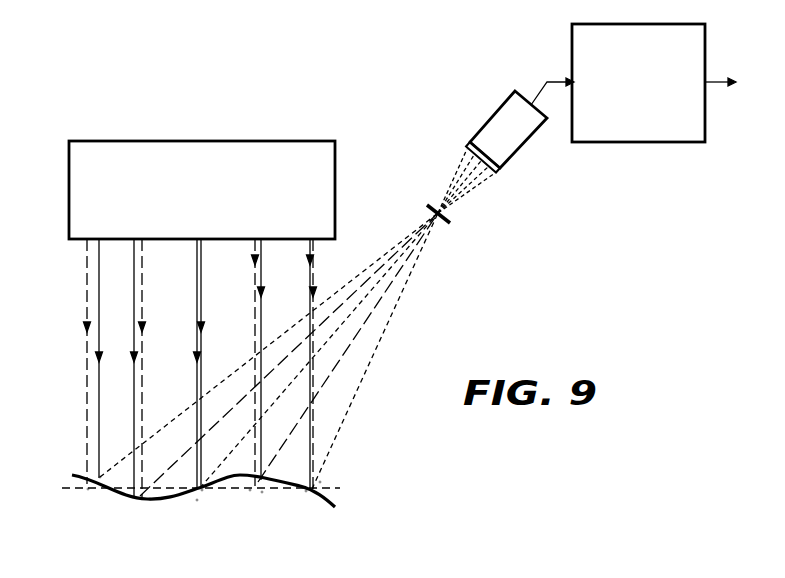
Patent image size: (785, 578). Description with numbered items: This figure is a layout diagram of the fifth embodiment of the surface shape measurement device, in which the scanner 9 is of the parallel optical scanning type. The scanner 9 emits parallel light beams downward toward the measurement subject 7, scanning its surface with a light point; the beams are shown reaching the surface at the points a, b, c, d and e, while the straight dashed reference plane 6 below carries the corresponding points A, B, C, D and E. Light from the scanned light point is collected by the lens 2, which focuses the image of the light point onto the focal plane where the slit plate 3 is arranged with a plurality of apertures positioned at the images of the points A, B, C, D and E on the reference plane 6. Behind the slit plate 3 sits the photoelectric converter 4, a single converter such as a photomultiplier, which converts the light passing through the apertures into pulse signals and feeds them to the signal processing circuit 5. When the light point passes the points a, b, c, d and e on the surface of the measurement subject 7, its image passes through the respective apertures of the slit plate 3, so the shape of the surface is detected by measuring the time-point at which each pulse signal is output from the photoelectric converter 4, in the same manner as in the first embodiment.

The lens 2 is at (456, 221).
The slit plate 3 is at (467, 150).
The photoelectric converter 4 is at (497, 112).
The signal processing circuit 5 is at (626, 143).
The reference plane 6 is at (75, 490).
The measurement subject 7 is at (80, 472).
The scanner 9 is at (222, 140).
The point a on surface a is at (100, 475).
The point A on reference plane A is at (88, 491).
The point b on surface b is at (133, 499).
The point B on reference plane B is at (150, 500).
The point c on surface c is at (197, 501).
The point C on reference plane C is at (202, 491).
The point d on surface d is at (262, 493).
The point D on reference plane D is at (250, 491).
The point e on surface e is at (306, 492).
The point E on reference plane E is at (321, 482).